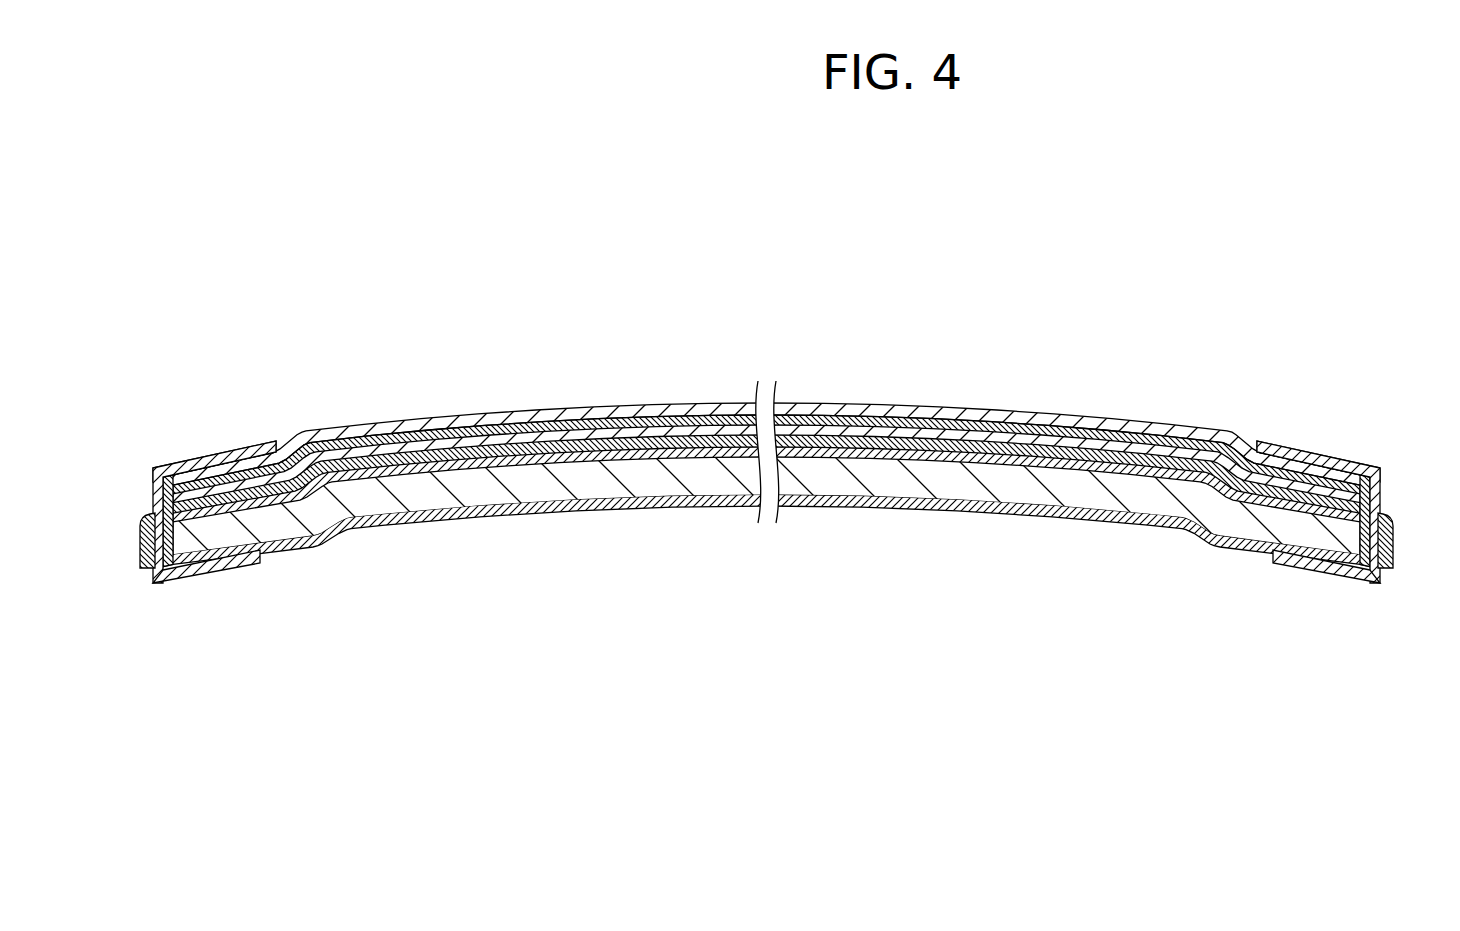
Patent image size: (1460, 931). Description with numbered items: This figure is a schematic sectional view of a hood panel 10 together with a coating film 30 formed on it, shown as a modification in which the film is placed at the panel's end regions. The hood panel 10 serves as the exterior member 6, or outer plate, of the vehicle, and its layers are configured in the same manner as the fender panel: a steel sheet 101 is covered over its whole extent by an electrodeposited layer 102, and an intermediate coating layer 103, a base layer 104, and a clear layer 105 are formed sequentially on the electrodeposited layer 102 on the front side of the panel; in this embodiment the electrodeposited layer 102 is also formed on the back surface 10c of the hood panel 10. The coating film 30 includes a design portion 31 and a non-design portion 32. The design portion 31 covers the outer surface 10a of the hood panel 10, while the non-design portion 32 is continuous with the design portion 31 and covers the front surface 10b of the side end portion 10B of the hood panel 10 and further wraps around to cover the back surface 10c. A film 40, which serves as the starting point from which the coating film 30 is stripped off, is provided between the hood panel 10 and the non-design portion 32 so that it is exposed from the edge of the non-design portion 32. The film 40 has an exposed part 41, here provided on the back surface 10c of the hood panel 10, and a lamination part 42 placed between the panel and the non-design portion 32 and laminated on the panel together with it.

The exterior member 6 is at (968, 255).
The hood panel 10 is at (768, 496).
The outer surface 10a is at (920, 410).
The front surface 10b is at (152, 515).
The back surface 10c is at (1081, 522).
The side end portion 10B is at (197, 468).
The steel sheet 101 is at (1157, 490).
The electrodeposited layer 102 is at (1130, 450).
The intermediate coating layer 103 is at (1076, 438).
The base layer 104 is at (1018, 428).
The clear layer 105 is at (955, 420).
The coating film 30 is at (768, 496).
The design portion 31 is at (649, 407).
The non-design portion 32 is at (162, 481).
The film 40 is at (156, 585).
The exposed part 41 is at (205, 568).
The lamination part 42 is at (144, 552).